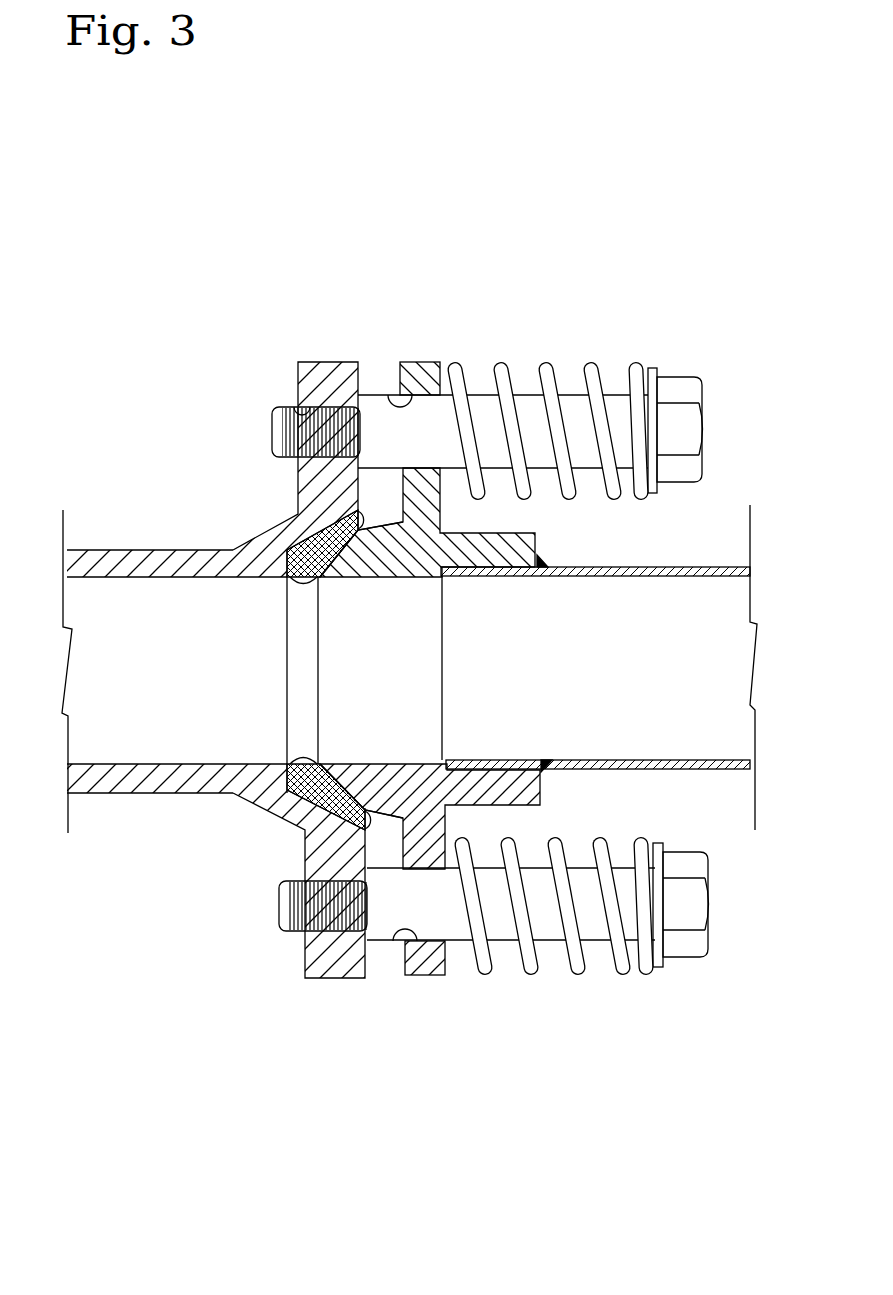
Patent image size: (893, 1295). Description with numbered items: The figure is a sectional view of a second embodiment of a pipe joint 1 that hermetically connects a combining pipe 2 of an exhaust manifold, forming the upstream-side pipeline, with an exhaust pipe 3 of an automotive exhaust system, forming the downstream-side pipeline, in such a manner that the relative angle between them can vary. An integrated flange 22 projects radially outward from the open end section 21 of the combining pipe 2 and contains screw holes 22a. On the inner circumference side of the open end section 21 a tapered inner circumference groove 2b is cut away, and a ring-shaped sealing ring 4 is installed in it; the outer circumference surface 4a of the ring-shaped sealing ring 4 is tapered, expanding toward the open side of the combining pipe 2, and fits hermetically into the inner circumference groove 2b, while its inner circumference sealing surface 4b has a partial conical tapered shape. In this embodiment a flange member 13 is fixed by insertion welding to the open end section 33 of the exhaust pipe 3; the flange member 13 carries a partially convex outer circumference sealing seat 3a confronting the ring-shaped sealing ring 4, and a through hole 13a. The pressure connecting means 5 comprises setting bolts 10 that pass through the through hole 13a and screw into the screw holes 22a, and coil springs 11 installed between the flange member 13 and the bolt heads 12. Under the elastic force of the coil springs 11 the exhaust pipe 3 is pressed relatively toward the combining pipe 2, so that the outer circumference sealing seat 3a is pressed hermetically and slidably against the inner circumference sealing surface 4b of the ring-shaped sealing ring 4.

The pipe joint 1 is at (282, 332).
The combining pipe 2 is at (127, 548).
The inner circumference groove 2b is at (305, 527).
The open end section 21 is at (283, 582).
The integrated flange 22 is at (328, 360).
The screw hole 22a is at (300, 407).
The exhaust pipe 3 is at (697, 565).
The outer circumference sealing seat 3a is at (380, 518).
The open end section 33 is at (349, 577).
The ring-shaped sealing ring 4 is at (285, 548).
The outer circumference surface 4a is at (372, 512).
The inner circumference sealing surface 4b is at (313, 586).
The pressure connecting means 5 is at (480, 328).
The setting bolt 10 is at (680, 375).
The coil spring 11 is at (542, 362).
The bolt head 12 is at (700, 378).
The flange member 13 is at (426, 360).
The through hole 13a is at (393, 398).